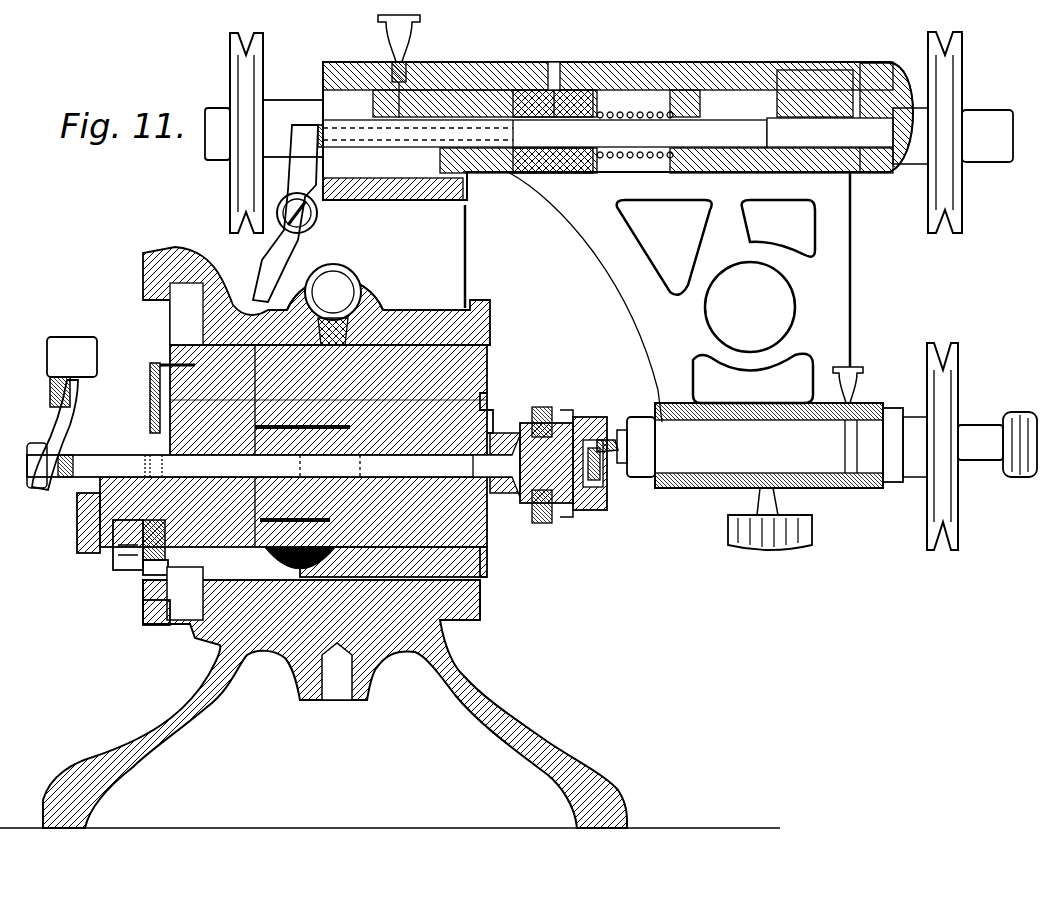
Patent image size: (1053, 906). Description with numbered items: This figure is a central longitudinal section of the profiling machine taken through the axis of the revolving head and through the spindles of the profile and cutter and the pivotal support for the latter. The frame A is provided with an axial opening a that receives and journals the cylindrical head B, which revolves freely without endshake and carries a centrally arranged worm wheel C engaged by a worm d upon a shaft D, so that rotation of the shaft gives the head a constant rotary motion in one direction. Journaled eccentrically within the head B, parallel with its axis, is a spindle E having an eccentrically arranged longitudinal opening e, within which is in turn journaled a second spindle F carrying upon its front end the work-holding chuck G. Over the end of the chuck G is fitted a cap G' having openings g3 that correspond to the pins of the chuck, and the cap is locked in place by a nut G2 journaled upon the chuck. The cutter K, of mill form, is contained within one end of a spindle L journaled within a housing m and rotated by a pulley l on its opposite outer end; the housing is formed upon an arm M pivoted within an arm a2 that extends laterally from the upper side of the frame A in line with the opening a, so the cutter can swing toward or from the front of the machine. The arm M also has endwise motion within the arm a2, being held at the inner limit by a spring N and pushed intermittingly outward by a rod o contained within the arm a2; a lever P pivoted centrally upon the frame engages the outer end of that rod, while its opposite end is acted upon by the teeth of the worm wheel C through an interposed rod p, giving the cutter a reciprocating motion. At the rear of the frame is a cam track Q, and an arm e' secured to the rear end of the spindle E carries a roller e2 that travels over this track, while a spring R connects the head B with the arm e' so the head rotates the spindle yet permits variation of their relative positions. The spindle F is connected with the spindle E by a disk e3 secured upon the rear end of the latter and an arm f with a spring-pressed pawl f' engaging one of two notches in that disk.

The frame A is at (352, 500).
The axial opening a is at (452, 588).
The arm a2 is at (482, 202).
The cylindrical head B is at (462, 362).
The worm wheel C is at (362, 282).
The shaft D is at (333, 292).
The worm d is at (340, 330).
The spindle E is at (478, 523).
The longitudinal opening e is at (500, 433).
The arm e' is at (110, 555).
The roller e2 is at (145, 583).
The disk e3 is at (77, 512).
The second spindle F is at (273, 466).
The arm f is at (48, 435).
The spring-pressed pawl f' is at (84, 372).
The work-holding chuck G is at (555, 452).
The cap G' is at (592, 479).
The nut G2 is at (559, 481).
The openings g3 is at (605, 465).
The cutter K is at (606, 438).
The spindle L is at (772, 427).
The pulley l is at (972, 446).
The arm M is at (832, 313).
The housing m is at (752, 518).
The spring N is at (635, 112).
The rod o is at (320, 135).
The lever P is at (295, 182).
The rod p is at (262, 290).
The cam track Q is at (152, 605).
The spring R is at (150, 375).